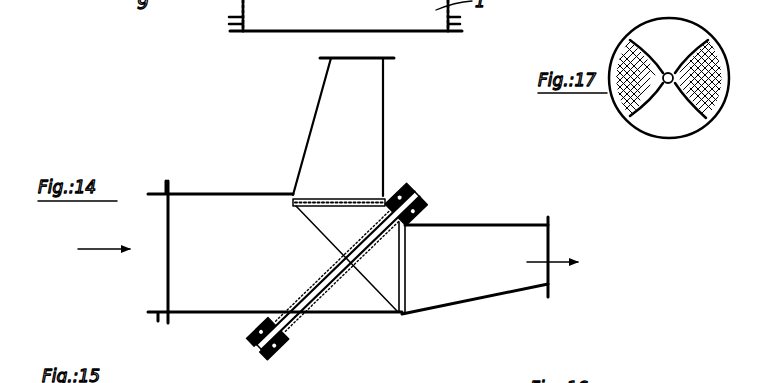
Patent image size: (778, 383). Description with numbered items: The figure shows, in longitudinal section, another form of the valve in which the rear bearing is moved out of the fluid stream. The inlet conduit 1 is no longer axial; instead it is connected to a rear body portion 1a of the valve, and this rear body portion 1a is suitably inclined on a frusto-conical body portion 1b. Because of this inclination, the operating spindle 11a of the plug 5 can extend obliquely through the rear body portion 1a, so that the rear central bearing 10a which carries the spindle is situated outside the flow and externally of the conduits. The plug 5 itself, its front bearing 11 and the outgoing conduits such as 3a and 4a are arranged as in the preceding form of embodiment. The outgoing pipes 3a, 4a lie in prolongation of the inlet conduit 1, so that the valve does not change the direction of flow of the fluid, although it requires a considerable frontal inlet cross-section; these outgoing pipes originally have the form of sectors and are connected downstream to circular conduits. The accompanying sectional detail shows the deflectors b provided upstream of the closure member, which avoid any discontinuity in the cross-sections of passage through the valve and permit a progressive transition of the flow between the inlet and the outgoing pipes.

In FIG. 14, the inlet conduit 1 is at (153, 205).
In FIG. 14, the rear body portion 1a is at (219, 206).
In FIG. 14, the frusto-conical body portion 1b is at (410, 290).
In FIG. 14, the outgoing conduit 3a is at (365, 111).
In FIG. 14, the outgoing conduit 4a is at (487, 235).
In FIG. 14, the plug 5 is at (343, 200).
In FIG. 14, the rear central bearing 10a is at (285, 350).
In FIG. 14, the front bearing 11 is at (405, 205).
In FIG. 14, the operating spindle 11a is at (317, 287).
In FIG. 17, the deflector b is at (693, 55).